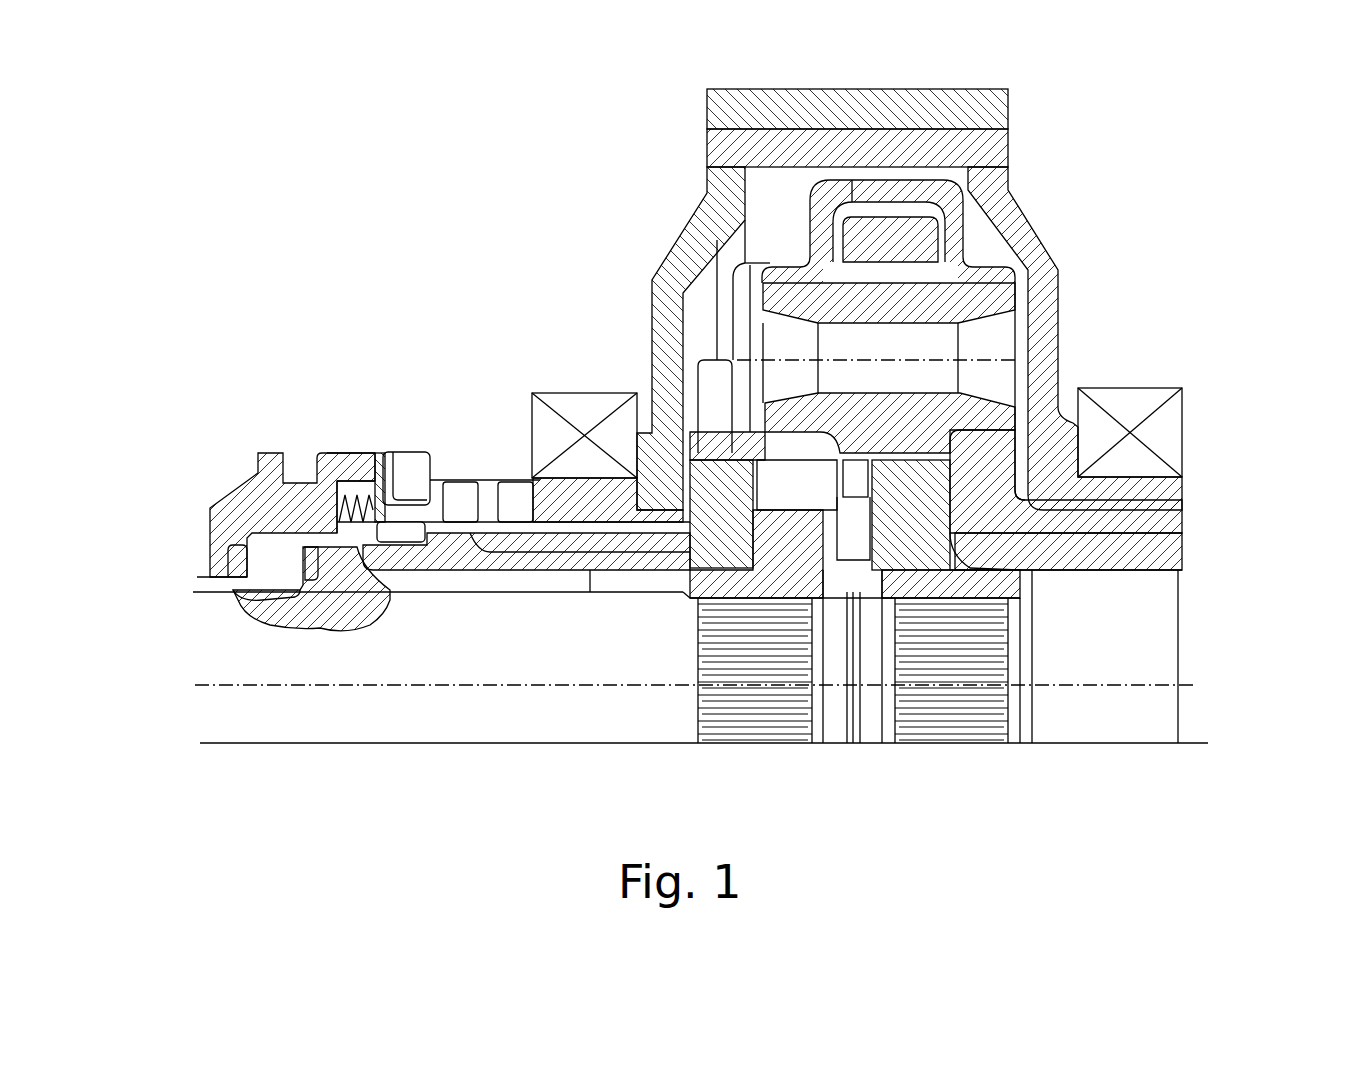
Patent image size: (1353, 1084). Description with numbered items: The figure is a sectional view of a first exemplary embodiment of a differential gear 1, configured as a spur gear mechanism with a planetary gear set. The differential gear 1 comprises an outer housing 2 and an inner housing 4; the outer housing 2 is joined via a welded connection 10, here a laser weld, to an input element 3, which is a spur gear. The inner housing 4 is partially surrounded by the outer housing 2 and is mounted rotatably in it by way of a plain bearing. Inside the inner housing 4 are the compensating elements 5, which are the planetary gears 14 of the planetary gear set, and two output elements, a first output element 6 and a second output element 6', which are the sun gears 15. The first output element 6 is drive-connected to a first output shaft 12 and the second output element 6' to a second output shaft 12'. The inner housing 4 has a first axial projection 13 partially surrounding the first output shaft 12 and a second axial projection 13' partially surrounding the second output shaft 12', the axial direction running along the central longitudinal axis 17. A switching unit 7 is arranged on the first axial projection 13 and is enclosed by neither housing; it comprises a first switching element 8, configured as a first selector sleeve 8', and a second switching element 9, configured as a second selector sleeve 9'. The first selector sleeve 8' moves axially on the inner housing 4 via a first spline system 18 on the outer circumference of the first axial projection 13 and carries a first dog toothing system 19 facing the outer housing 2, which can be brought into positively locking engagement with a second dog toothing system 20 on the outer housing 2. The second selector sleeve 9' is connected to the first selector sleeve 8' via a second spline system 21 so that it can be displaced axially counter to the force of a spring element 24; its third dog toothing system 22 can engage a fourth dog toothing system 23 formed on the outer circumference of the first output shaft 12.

The differential gear 1 is at (490, 190).
The outer housing 2 is at (688, 255).
The input element 3 is at (993, 108).
The welded connection 10 is at (1012, 167).
The inner housing 4 is at (963, 232).
The compensating element 5 is at (993, 297).
The planetary gear 14 is at (852, 371).
The first output element 6 is at (851, 595).
The sun gear 15 is at (793, 527).
The second output element 6' is at (1135, 610).
The first axial projection 13 is at (607, 442).
The second axial projection 13' is at (1137, 479).
The first switching element 8 is at (513, 466).
The first selector sleeve 8' is at (406, 478).
The first dog toothing system 19 is at (457, 458).
The second dog toothing system 20 is at (515, 458).
The second spline system 21 is at (387, 458).
The first spline system 18 is at (357, 458).
The spring element 24 is at (343, 458).
The second switching element 9 is at (250, 505).
The second selector sleeve 9' is at (237, 561).
The switching unit 7 is at (270, 428).
The fourth dog toothing system 23 is at (313, 580).
The third dog toothing system 22 is at (205, 595).
The first output shaft 12 is at (698, 695).
The second output shaft 12' is at (1099, 695).
The central longitudinal axis 17 is at (450, 690).